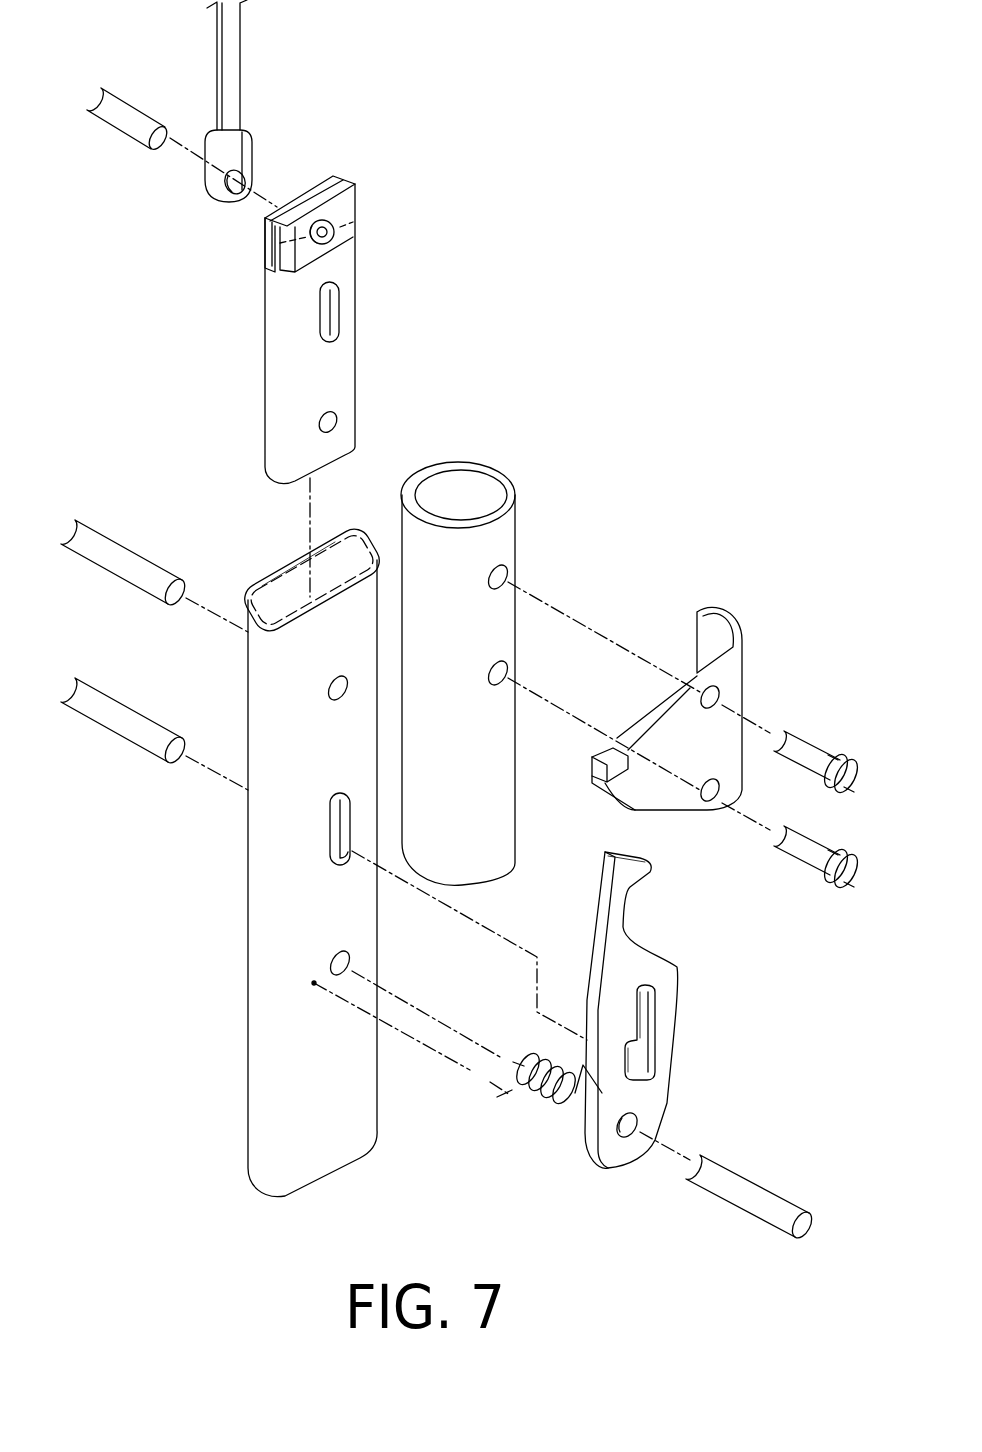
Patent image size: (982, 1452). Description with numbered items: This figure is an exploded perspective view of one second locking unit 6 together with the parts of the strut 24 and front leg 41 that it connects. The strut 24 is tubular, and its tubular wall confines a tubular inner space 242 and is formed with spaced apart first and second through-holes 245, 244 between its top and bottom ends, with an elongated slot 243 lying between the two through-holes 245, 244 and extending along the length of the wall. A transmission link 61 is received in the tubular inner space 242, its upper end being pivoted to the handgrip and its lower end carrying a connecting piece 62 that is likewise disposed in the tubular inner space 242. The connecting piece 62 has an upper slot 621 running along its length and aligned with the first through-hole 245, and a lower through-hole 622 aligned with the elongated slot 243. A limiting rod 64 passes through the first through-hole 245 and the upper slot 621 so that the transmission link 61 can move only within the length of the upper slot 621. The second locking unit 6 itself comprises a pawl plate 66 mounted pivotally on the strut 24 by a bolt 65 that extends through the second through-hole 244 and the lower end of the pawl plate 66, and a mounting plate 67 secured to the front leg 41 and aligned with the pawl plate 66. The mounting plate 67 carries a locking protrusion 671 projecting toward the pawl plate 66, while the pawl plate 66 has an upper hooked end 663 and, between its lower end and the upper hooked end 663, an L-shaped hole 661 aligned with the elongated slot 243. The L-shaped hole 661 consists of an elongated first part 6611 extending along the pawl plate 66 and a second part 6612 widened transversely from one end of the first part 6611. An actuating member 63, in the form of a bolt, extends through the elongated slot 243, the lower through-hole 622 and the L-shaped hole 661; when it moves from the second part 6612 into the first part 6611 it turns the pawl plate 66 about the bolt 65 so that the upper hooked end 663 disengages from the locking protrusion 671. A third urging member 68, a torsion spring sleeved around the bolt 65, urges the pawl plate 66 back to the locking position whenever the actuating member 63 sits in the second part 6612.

The second locking unit 6 is at (772, 614).
The strut 24 is at (275, 1018).
The tubular inner space 242 is at (340, 545).
The elongated slot 243 is at (338, 830).
The second through-hole 244 is at (341, 975).
The first through-hole 245 is at (350, 688).
The front leg 41 is at (503, 523).
The transmission link 61 is at (243, 65).
The connecting piece 62 is at (352, 252).
The upper slot 621 is at (330, 302).
The lower through-hole 622 is at (322, 413).
The actuating member 63 is at (122, 718).
The limiting rod 64 is at (125, 563).
The bolt 65 is at (737, 1187).
The pawl plate 66 is at (677, 993).
The L-shaped hole 661 is at (637, 1005).
The first part 6611 is at (647, 1027).
The second part 6612 is at (633, 1062).
The upper hooked end 663 is at (627, 855).
The mounting plate 67 is at (718, 750).
The locking protrusion 671 is at (613, 747).
The third urging member 68 is at (530, 1090).